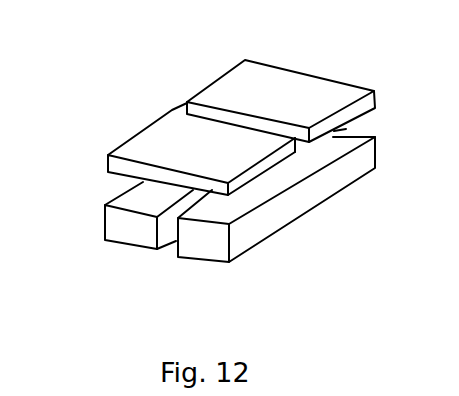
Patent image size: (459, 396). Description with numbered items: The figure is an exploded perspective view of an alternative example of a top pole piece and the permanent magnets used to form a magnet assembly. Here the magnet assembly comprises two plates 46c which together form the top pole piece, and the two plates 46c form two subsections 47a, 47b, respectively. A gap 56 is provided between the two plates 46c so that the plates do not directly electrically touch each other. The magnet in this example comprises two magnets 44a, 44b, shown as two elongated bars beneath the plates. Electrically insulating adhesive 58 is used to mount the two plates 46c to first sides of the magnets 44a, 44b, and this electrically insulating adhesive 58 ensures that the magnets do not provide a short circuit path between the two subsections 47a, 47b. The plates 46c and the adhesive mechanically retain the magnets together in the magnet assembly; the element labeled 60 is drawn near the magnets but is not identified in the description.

The magnet 44a is at (146, 234).
The magnet 44b is at (215, 248).
The plates 46c is at (227, 95).
The subsection 47a is at (168, 135).
The subsection 47b is at (275, 97).
The gap 56 is at (310, 141).
The electrically insulating adhesive 58 is at (333, 139).
The gap 60 is at (290, 190).